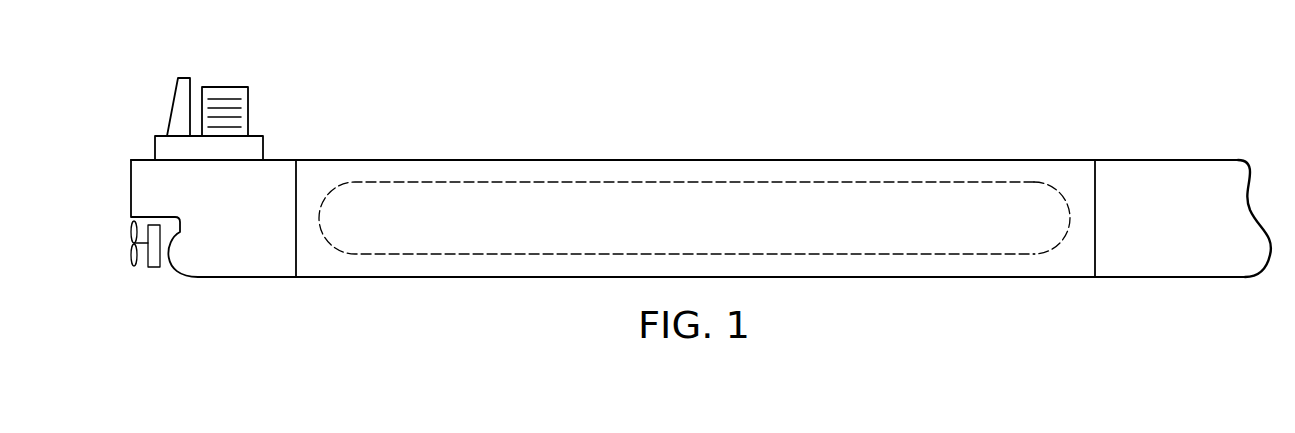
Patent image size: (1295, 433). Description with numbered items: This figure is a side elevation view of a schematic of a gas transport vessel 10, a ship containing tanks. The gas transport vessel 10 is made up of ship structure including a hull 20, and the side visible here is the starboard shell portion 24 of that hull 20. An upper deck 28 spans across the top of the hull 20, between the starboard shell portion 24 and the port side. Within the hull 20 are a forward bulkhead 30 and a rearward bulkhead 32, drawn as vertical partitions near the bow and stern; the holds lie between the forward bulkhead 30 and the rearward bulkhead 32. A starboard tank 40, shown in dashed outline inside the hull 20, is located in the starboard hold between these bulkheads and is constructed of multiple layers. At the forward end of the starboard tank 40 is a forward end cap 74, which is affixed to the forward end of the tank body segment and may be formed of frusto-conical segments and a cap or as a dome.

The gas transport vessel 10 is at (368, 68).
The hull 20 is at (1187, 160).
The starboard shell portion 24 is at (1190, 268).
The upper deck 28 is at (485, 160).
The forward bulkhead 30 is at (1095, 183).
The rearward bulkhead 32 is at (296, 242).
The starboard tank 40 is at (697, 182).
The forward end cap 74 is at (1038, 215).